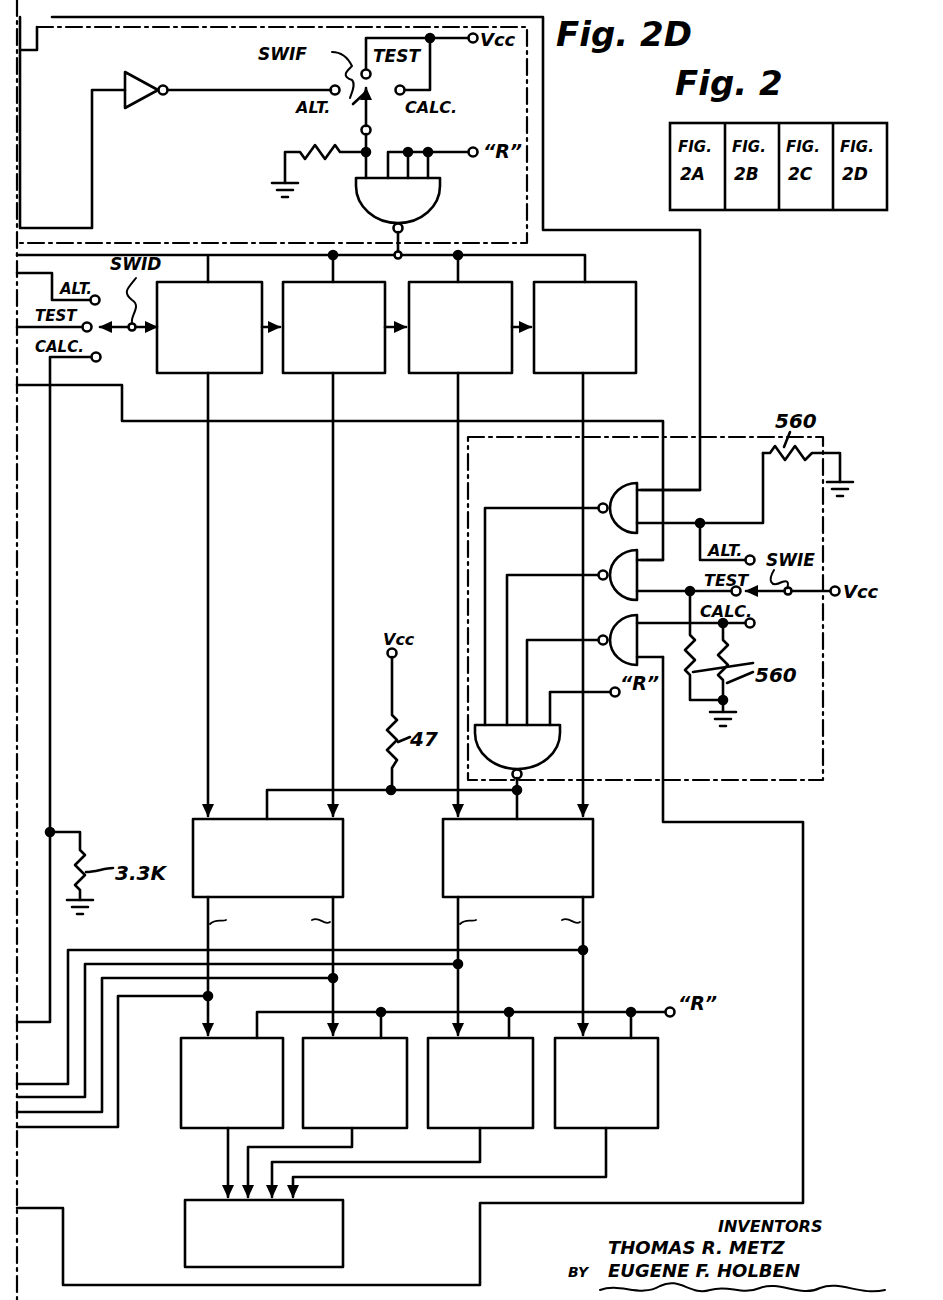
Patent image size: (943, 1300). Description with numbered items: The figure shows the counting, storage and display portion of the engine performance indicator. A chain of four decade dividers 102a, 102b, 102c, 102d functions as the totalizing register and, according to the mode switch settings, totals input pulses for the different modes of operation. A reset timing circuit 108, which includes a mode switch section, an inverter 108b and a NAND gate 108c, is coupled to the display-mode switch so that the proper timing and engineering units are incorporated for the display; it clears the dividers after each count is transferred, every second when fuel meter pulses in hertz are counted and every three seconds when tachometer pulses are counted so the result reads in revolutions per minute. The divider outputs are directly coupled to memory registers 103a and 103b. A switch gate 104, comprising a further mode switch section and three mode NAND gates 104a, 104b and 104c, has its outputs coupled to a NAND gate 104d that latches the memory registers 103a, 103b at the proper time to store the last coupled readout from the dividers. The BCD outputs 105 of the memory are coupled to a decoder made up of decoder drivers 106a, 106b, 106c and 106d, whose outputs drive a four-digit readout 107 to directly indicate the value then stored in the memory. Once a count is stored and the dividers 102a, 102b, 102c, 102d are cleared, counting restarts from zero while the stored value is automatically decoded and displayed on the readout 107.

The reset timing circuit 108 is at (110, 244).
The inverter 108b is at (140, 100).
The NAND gate 108c is at (418, 208).
The decade divider 102a is at (245, 366).
The decade divider 102b is at (368, 366).
The decade divider 102c is at (493, 366).
The decade divider 102d is at (617, 366).
The switch gate 104 is at (805, 782).
The mode NAND gate 104a is at (622, 488).
The mode NAND gate 104b is at (613, 592).
The mode NAND gate 104c is at (617, 632).
The NAND gate 104d is at (560, 740).
The memory register 103a is at (343, 857).
The memory register 103b is at (593, 857).
The BCD outputs 105 is at (455, 950).
The decoder driver 106a is at (203, 1120).
The decoder driver 106b is at (393, 1120).
The decoder driver 106c is at (513, 1120).
The decoder driver 106d is at (630, 1122).
The four-digit readout 107 is at (343, 1248).